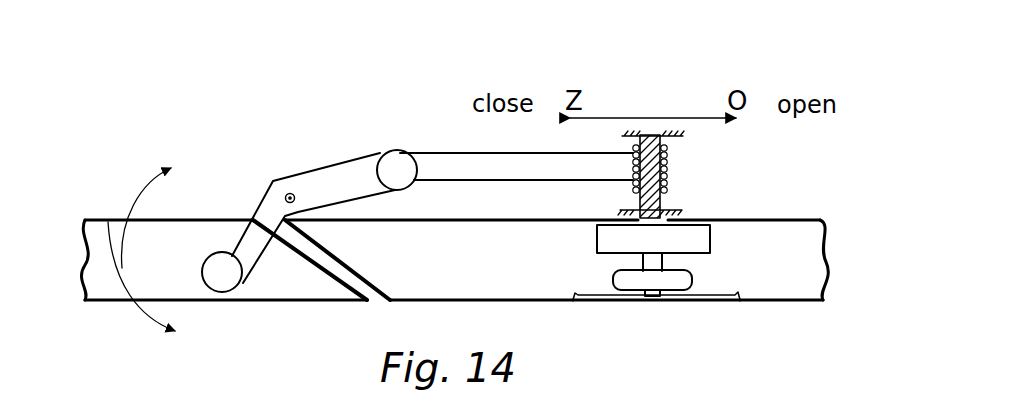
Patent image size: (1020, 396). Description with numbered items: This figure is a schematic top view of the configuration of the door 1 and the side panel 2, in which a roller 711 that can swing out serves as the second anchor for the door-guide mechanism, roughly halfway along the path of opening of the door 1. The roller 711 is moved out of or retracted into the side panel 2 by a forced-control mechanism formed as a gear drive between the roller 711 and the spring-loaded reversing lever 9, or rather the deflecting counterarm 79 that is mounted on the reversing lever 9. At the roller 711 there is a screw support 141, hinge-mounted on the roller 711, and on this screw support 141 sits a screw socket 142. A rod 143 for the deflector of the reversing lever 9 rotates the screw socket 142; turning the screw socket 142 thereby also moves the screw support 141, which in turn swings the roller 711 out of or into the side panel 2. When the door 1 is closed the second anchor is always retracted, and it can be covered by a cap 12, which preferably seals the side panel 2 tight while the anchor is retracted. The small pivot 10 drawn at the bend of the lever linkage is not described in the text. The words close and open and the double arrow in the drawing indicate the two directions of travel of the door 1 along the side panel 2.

The door 1 is at (122, 268).
The side panel 2 is at (787, 247).
The reversing lever 9 is at (222, 252).
The pivot 10 is at (290, 193).
The cap 12 is at (625, 303).
The deflecting counterarm 79 is at (349, 160).
The screw support 141 is at (650, 150).
The screw socket 142 is at (667, 165).
The rod 143 is at (432, 152).
The roller 711 is at (675, 277).